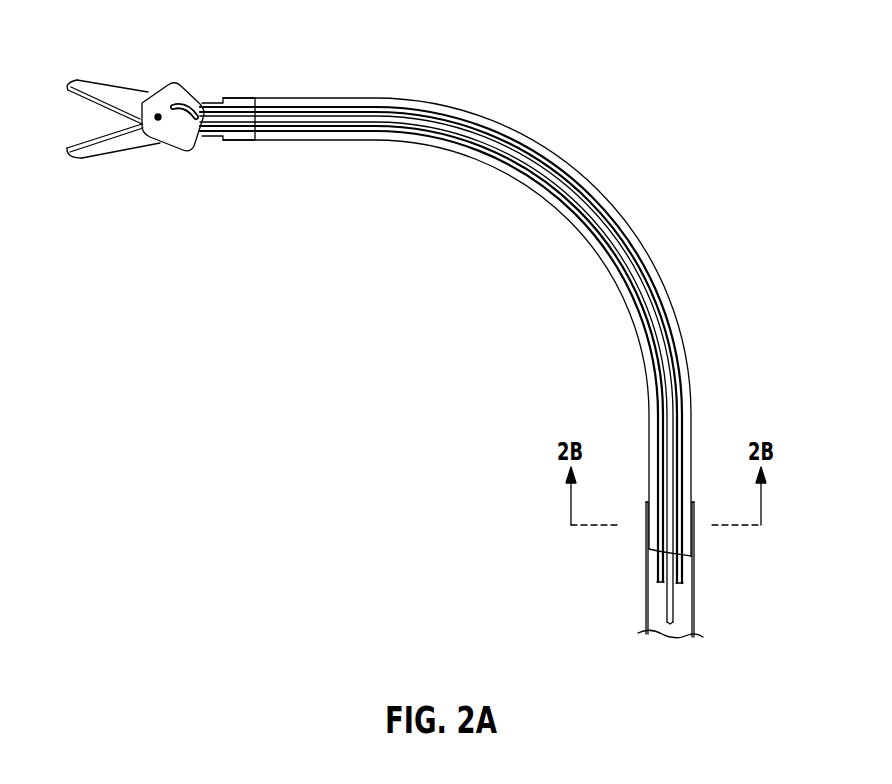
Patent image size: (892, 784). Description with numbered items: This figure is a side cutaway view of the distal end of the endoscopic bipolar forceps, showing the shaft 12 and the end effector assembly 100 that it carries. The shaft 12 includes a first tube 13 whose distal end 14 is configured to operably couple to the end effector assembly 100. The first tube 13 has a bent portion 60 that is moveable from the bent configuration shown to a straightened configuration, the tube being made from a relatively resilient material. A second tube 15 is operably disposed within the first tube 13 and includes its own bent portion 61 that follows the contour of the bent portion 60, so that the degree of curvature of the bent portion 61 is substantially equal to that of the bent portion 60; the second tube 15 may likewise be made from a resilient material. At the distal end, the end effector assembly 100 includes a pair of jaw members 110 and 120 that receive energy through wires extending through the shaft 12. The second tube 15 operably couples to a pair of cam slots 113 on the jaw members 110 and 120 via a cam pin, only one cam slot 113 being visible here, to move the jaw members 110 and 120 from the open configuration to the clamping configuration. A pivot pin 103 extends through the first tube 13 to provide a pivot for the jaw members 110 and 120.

The end effector assembly 100 is at (181, 46).
The jaw member 110 is at (95, 78).
The jaw member 120 is at (91, 160).
The pivot pin 103 is at (161, 120).
The cam slot 113 is at (187, 99).
The distal end 14 is at (239, 98).
The first tube 13 is at (681, 355).
The second tube 15 is at (681, 407).
The bent portion 60 is at (597, 179).
The bent portion 61 is at (584, 202).
The shaft 12 is at (698, 588).